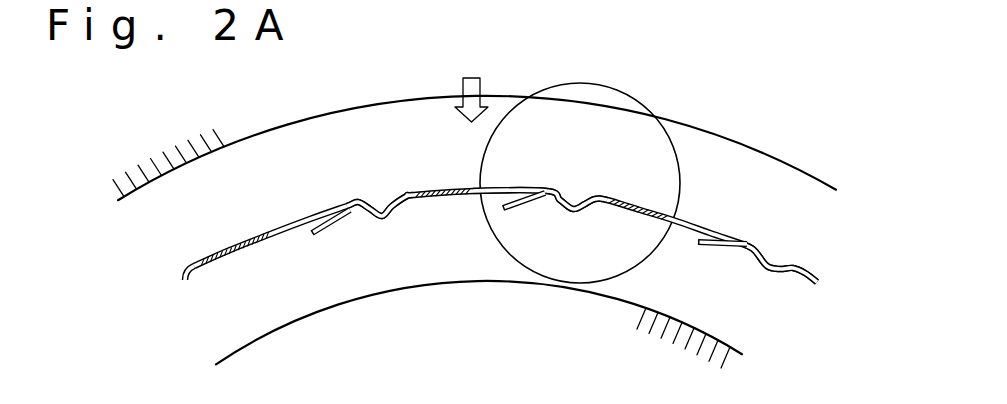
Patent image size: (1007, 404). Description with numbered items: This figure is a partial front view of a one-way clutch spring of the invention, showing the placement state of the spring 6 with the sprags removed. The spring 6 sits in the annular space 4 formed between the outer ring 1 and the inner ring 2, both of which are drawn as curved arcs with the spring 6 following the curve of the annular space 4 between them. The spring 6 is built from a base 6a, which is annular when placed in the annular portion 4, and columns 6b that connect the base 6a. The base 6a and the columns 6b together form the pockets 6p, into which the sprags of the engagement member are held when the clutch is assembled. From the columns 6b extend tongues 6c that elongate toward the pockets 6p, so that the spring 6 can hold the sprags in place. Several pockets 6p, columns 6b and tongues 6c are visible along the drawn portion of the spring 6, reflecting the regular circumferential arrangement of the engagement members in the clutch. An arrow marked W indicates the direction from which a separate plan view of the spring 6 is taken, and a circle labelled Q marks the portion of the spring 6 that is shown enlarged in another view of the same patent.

The outer ring 1 is at (207, 143).
The inner ring 2 is at (652, 328).
The annular space 4 is at (693, 147).
The one-way clutch spring 6 is at (501, 217).
The base 6a is at (527, 187).
The columns 6b is at (430, 188).
The tongues 6c is at (323, 234).
The pockets 6p is at (313, 207).
The portion Q is at (647, 112).
The direction W is at (471, 78).